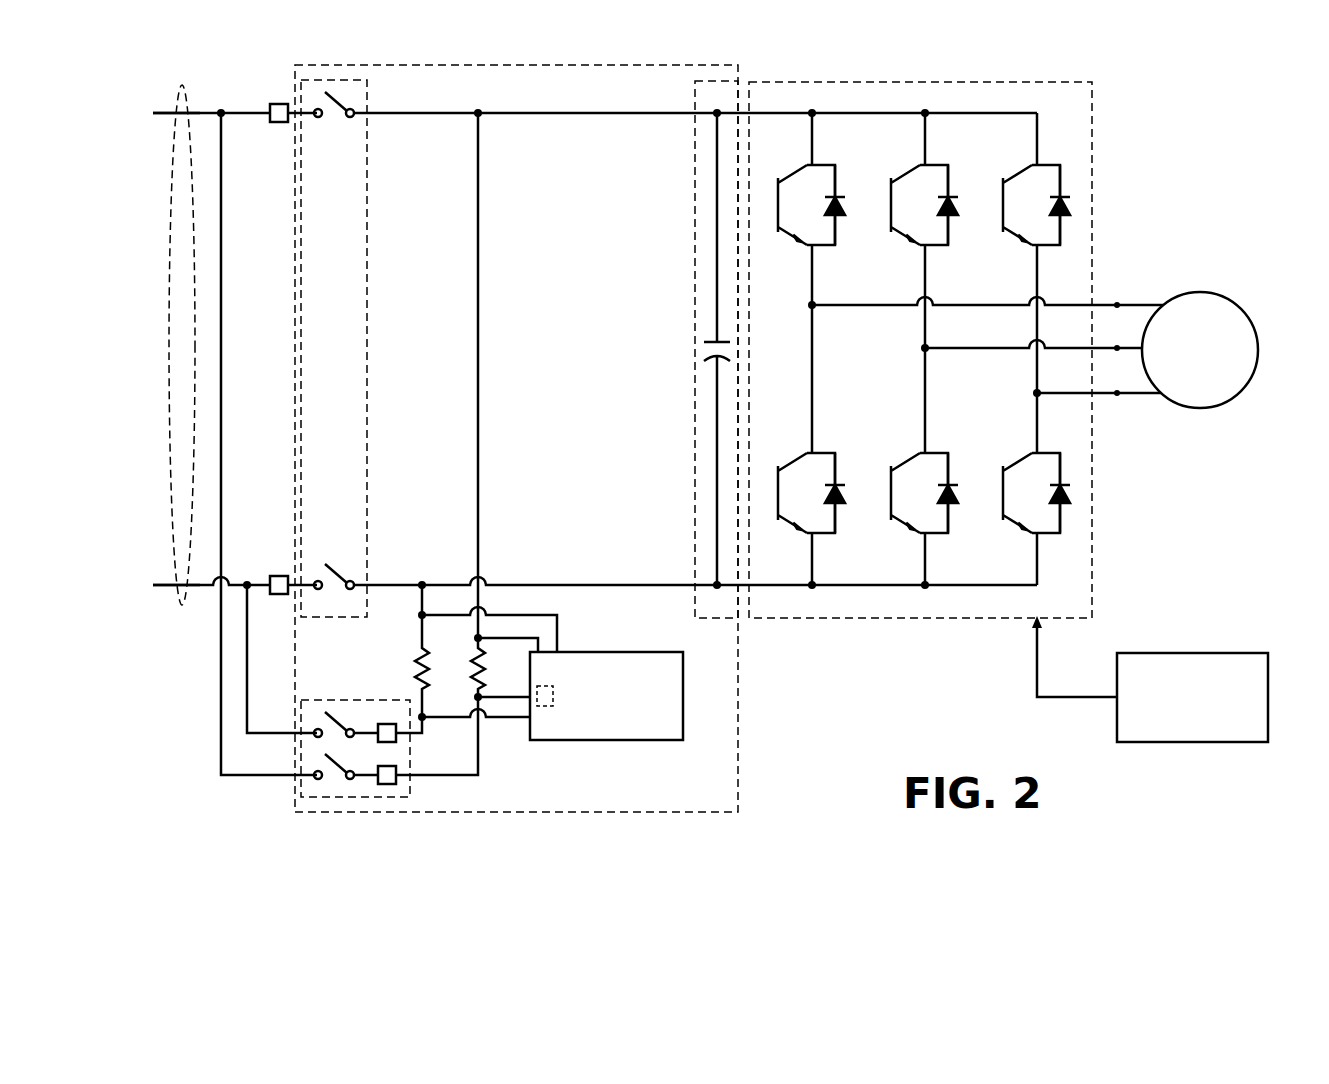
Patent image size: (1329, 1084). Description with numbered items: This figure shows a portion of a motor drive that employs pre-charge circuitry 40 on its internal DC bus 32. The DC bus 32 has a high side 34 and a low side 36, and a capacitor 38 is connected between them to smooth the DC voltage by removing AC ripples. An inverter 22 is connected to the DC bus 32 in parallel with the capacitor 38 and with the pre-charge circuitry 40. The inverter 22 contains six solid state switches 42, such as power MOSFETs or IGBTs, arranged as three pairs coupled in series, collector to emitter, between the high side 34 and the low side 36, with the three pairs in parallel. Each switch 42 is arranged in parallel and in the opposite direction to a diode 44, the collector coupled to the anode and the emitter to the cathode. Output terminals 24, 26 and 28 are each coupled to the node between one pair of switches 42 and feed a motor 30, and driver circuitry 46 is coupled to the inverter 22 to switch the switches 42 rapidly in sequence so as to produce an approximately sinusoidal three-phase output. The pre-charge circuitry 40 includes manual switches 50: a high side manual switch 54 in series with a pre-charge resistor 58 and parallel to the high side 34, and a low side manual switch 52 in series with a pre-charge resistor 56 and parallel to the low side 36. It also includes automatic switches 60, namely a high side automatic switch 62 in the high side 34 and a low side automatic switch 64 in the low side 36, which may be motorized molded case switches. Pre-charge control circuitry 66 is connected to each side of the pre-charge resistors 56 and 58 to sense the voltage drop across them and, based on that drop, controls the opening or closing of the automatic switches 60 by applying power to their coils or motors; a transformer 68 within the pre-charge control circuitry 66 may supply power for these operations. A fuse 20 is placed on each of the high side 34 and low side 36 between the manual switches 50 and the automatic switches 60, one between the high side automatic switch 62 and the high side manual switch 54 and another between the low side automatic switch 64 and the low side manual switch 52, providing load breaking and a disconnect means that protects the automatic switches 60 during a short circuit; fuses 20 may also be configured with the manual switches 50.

The fuse 20 is at (280, 123).
The inverter 22 is at (921, 334).
The output terminal 24 is at (1117, 305).
The output terminal 26 is at (1117, 348).
The output terminal 28 is at (1117, 394).
The motor 30 is at (1240, 310).
The internal DC bus 32 is at (170, 347).
The high side of the DC bus 34 is at (160, 113).
The low side of the DC bus 36 is at (160, 586).
The capacitor 38 is at (708, 335).
The pre-charge circuitry 40 is at (740, 716).
The solid state switch 42 is at (779, 198).
The diode 44 is at (838, 212).
The driver circuitry 46 is at (1190, 653).
The manual switches 50 is at (371, 700).
The low side manual switch 52 is at (335, 724).
The high side manual switch 54 is at (330, 782).
The pre-charge resistor 56 is at (430, 675).
The pre-charge resistor 58 is at (486, 676).
The automatic switches 60 is at (368, 352).
The high side automatic switch 62 is at (336, 104).
The low side automatic switch 64 is at (335, 575).
The pre-charge control circuitry 66 is at (607, 652).
The transformer 68 is at (541, 722).